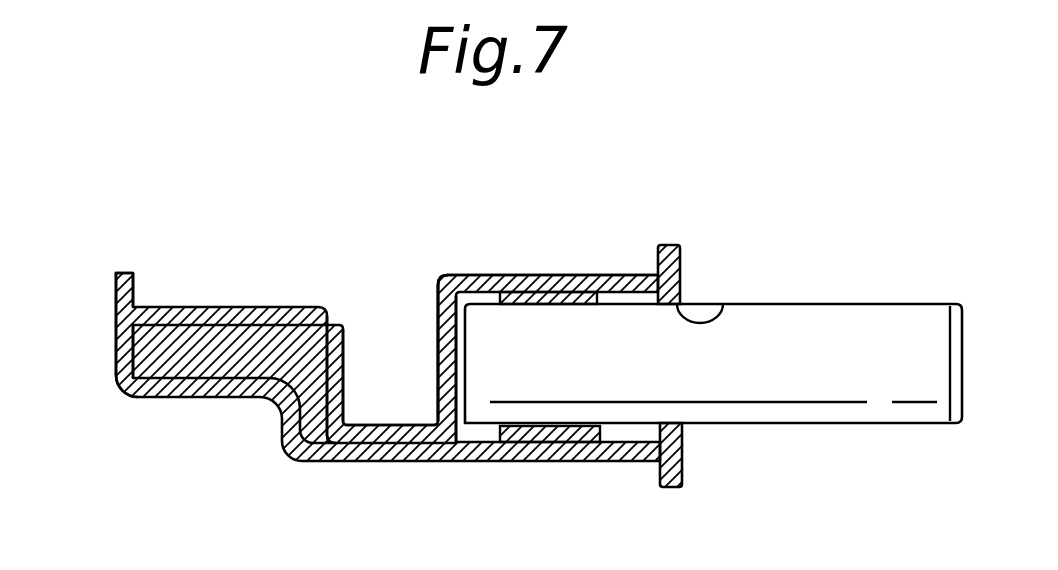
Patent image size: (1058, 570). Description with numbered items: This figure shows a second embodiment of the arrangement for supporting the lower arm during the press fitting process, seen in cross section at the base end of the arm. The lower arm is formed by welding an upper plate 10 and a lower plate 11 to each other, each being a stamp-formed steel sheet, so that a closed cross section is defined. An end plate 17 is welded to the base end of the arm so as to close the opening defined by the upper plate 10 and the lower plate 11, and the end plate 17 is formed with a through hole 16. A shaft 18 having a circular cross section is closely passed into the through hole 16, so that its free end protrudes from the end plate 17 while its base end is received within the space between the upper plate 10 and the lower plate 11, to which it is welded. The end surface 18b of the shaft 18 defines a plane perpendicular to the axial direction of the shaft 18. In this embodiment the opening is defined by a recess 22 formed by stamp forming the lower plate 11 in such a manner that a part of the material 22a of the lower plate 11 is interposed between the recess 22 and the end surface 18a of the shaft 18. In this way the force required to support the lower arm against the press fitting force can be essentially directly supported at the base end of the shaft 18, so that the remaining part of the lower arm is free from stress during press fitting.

The upper plate 10 is at (112, 298).
The lower plate 11 is at (197, 306).
The recess 22 is at (400, 424).
The part of the material of the lower plate 22a is at (438, 338).
The end surface of the shaft 18a is at (547, 323).
The inner end surface of the shaft 18b is at (447, 379).
The end plate 17 is at (665, 246).
The through hole 16 is at (724, 304).
The shaft 18 is at (846, 332).